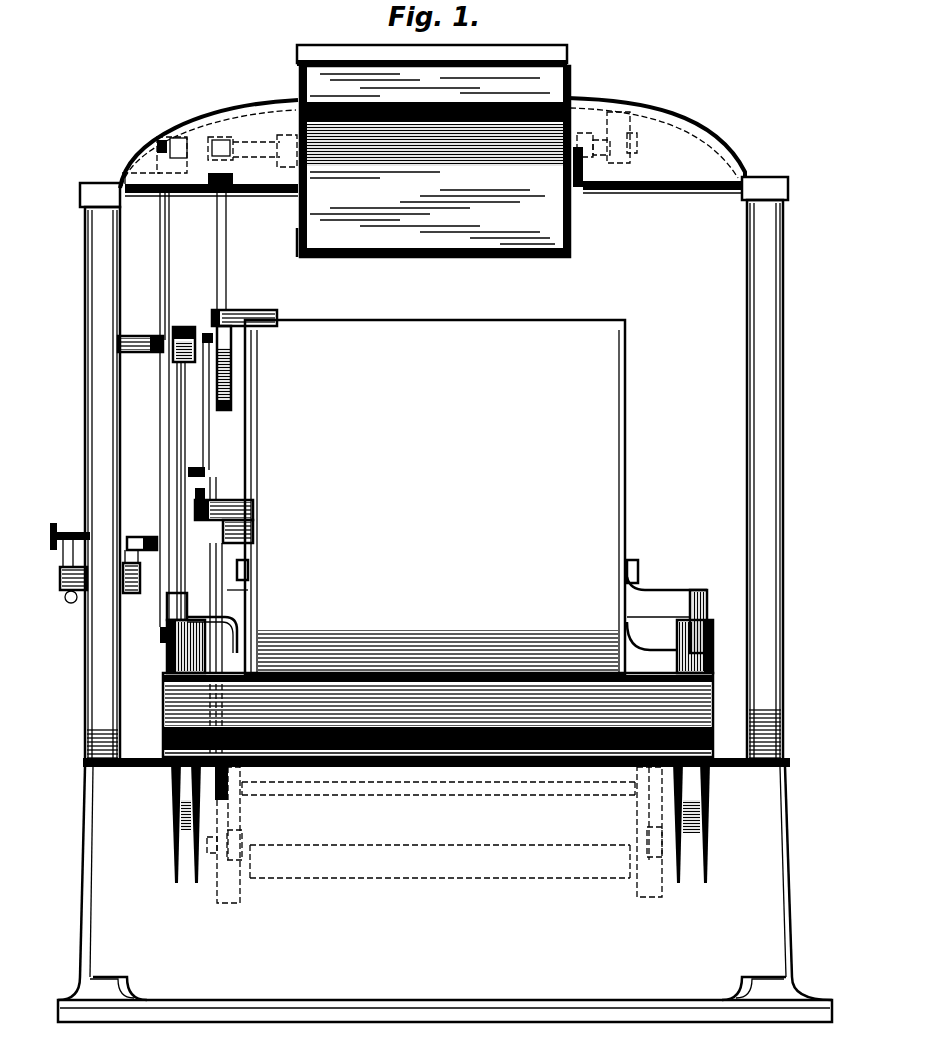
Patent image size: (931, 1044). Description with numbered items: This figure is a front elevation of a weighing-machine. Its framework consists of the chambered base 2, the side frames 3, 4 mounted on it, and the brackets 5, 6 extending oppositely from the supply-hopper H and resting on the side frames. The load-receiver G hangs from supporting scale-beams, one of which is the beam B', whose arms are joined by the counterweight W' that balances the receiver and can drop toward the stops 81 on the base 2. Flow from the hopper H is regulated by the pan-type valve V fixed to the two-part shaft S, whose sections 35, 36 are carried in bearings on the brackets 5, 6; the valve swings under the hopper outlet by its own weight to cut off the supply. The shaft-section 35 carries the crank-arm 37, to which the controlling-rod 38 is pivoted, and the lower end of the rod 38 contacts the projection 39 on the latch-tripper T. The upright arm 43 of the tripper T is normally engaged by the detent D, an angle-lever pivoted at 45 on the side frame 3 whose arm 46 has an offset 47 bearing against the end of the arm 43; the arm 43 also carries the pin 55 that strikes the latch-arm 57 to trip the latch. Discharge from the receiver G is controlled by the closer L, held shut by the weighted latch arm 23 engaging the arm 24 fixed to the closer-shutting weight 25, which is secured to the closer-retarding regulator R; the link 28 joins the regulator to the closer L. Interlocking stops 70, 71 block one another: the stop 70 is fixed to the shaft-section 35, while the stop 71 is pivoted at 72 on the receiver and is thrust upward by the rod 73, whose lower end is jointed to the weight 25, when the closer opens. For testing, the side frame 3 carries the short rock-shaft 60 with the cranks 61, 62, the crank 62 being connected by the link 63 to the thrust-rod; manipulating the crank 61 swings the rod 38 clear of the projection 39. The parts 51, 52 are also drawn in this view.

The chambered base 2 is at (445, 890).
The side frame 3 is at (85, 404).
The side frame 4 is at (787, 416).
The bracket 5 is at (232, 111).
The bracket 6 is at (654, 109).
The two-part shaft S is at (209, 146).
The shaft-section 35 is at (260, 160).
The shaft-section 36 is at (597, 158).
The crank-arm 37 is at (174, 156).
The supply-hopper H is at (433, 151).
The valve V is at (297, 237).
The vertical rod 51 is at (159, 240).
The rod guide 52 is at (160, 293).
The stop 70 is at (222, 272).
The pivot 72 is at (244, 310).
The stop 71 is at (228, 358).
The detent D is at (184, 330).
The detent arm 46 is at (187, 327).
The detent pivot 45 is at (145, 352).
The stop or offset 47 is at (187, 353).
The controlling-rod 38 is at (164, 425).
The upright arm of latch-tripper 43 is at (183, 434).
The latch-tripper T is at (182, 465).
The rod 73 is at (208, 433).
The projection or pin 55 is at (206, 490).
The closer L is at (221, 488).
The latch-arm 57 is at (213, 493).
The weighted arm of latch 23 is at (240, 528).
The crank 61 is at (68, 526).
The rock-shaft 60 is at (65, 592).
The link 63 is at (145, 537).
The crank-arm 62 is at (134, 593).
The projection 39 is at (160, 636).
The scale-beam B' is at (171, 640).
The arm 24 is at (222, 648).
The load-receiver G is at (479, 497).
The counterweight W' is at (438, 734).
The closer-retarding regulator R is at (440, 874).
The stops 81 is at (172, 780).
The closer-shutting weight 25 is at (223, 905).
The link 28 is at (242, 808).